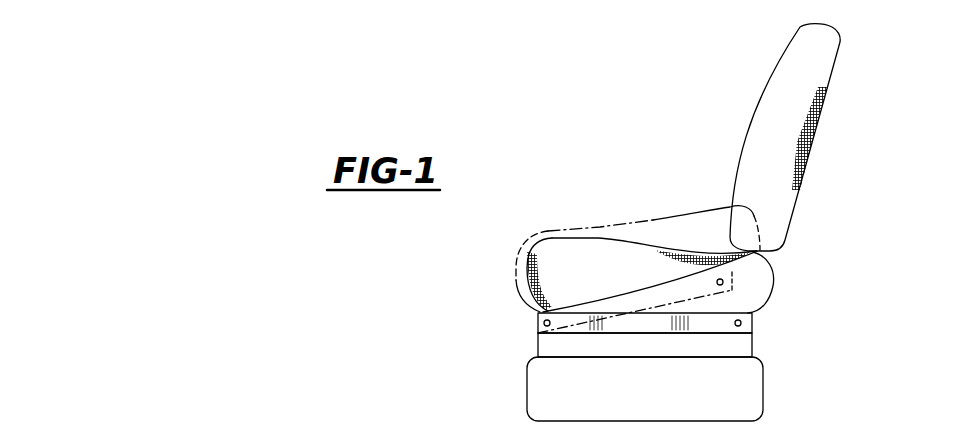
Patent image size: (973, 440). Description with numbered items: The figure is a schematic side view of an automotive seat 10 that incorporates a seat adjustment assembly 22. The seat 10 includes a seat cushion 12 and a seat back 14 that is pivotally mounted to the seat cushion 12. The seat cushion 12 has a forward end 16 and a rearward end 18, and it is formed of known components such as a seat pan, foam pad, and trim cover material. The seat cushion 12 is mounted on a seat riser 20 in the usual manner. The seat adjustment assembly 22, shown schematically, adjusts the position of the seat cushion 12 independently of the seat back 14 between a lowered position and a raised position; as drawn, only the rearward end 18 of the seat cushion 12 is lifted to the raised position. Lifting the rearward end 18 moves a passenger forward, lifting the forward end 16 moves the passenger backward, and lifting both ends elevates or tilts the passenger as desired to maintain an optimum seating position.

The automotive seat 10 is at (578, 109).
The seat cushion 12 is at (562, 248).
The seat back 14 is at (816, 80).
The forward end 16 is at (518, 285).
The rearward end 18 is at (772, 305).
The seat riser 20 is at (758, 396).
The seat adjustment assembly 22 is at (524, 315).